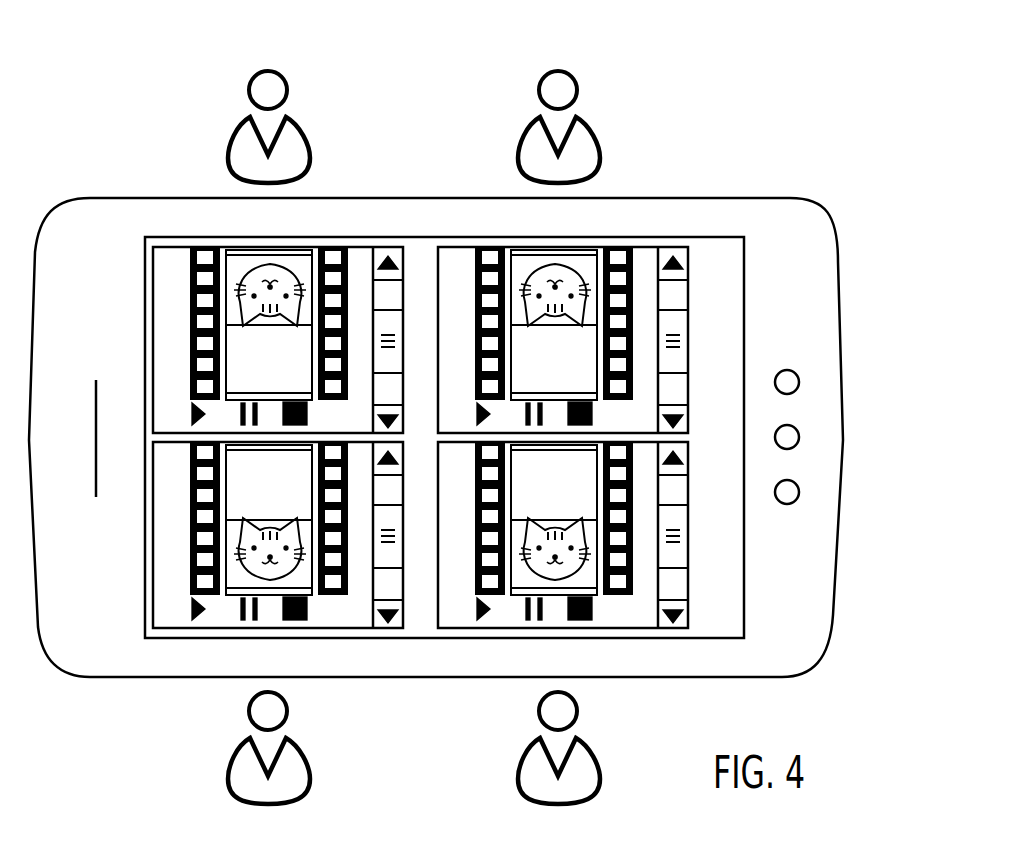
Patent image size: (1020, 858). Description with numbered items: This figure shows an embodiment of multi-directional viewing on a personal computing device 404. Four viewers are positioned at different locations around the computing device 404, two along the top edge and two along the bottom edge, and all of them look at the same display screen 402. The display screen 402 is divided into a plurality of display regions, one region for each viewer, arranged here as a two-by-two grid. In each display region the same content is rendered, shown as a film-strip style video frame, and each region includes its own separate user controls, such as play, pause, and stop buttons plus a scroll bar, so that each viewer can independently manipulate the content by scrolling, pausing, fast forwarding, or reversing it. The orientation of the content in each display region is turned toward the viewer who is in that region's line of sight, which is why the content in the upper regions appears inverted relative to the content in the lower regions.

The display screen 402 is at (745, 300).
The computing device 404 is at (786, 197).